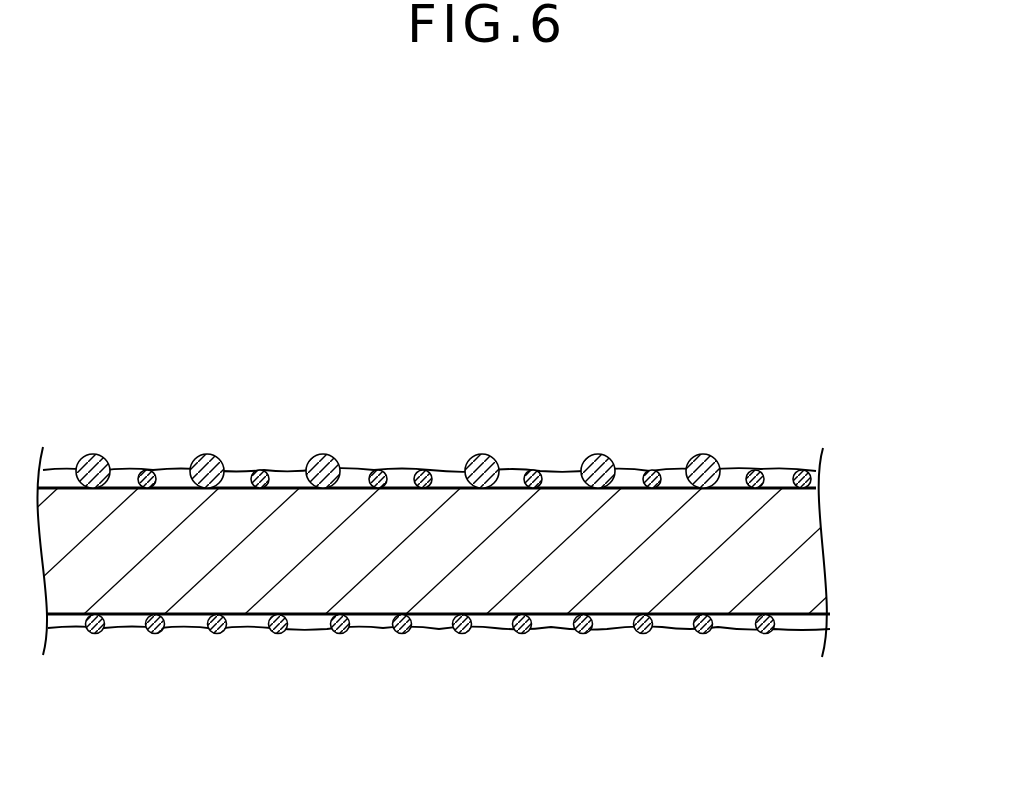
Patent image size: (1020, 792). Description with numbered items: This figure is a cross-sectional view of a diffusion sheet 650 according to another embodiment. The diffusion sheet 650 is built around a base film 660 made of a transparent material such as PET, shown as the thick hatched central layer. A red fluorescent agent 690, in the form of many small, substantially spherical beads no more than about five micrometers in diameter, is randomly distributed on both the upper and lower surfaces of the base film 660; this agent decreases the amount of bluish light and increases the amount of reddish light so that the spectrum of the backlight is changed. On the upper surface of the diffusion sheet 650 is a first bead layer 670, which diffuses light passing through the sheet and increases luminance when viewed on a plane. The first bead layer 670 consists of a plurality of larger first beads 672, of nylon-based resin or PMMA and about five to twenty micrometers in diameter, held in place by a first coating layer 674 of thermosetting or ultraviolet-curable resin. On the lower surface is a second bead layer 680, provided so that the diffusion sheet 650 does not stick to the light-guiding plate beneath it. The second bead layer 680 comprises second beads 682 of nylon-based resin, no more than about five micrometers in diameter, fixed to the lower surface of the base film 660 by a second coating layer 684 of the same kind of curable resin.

The diffusion sheet 650 is at (429, 318).
The base film 660 is at (805, 555).
The first bead layer 670 is at (816, 480).
The first beads 672 is at (702, 458).
The first coating layer 674 is at (560, 473).
The second bead layer 680 is at (805, 630).
The second beads 682 is at (698, 632).
The second coating layer 684 is at (615, 625).
The red fluorescent agent 690 is at (423, 470).